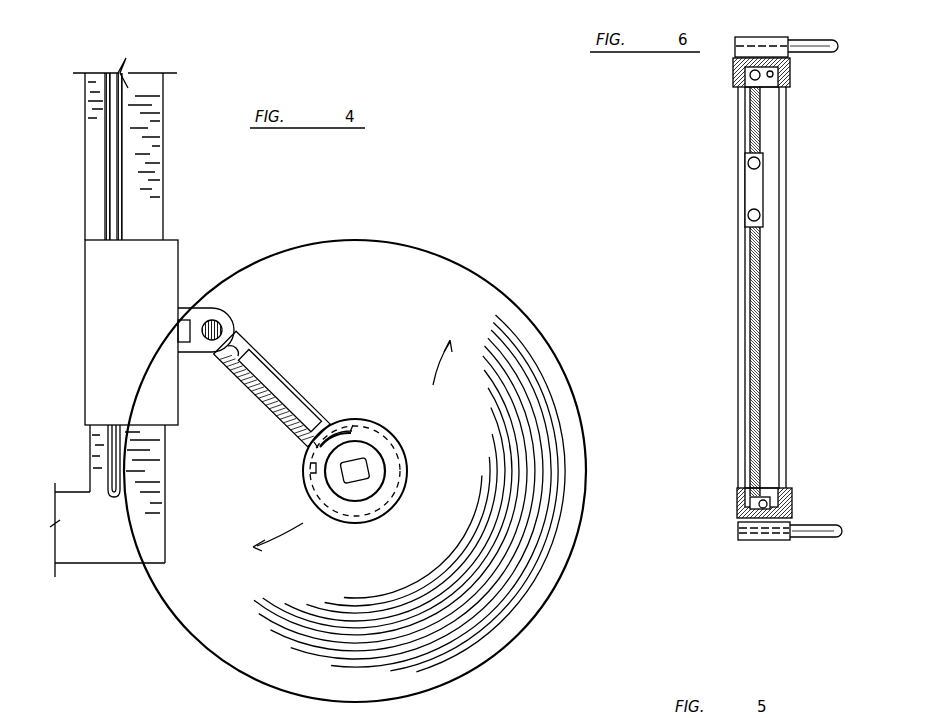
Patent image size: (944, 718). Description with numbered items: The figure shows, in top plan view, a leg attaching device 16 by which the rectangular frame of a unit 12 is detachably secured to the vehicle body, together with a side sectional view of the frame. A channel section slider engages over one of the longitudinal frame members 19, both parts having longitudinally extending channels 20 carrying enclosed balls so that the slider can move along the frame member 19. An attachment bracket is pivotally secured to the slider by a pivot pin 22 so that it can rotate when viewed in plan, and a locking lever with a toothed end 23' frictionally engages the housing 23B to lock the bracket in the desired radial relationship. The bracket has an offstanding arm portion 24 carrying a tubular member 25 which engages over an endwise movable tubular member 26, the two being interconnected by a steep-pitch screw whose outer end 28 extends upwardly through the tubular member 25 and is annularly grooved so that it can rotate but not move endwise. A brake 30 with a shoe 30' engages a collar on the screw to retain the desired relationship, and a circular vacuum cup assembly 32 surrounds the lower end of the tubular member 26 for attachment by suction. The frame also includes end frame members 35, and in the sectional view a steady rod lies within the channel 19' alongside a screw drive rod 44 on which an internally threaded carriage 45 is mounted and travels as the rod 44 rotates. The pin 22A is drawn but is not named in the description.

In FIG. 4, the unit 12 is at (108, 575).
In FIG. 4, the leg attaching devices 16 is at (316, 352).
In FIG. 4, the longitudinal frame member 19 is at (144, 149).
In FIG. 6, the longitudinal frame member 19 is at (785, 69).
In FIG. 6, the channel 19' is at (789, 504).
In FIG. 4, the longitudinally extending channels 20 is at (125, 496).
In FIG. 4, the pivot pin 22 is at (222, 332).
In FIG. 4, the pivot pin 22A is at (218, 322).
In FIG. 4, the housing 23B is at (242, 346).
In FIG. 4, the toothed end 23' is at (217, 389).
In FIG. 4, the offstanding arm portion 24 is at (334, 420).
In FIG. 4, the tubular member 25 is at (386, 435).
In FIG. 4, the endwise movable tubular member 26 is at (420, 454).
In FIG. 4, the outer end of the screw 28 is at (367, 478).
In FIG. 4, the brake 30 is at (285, 461).
In FIG. 4, the shoe 30' is at (361, 407).
In FIG. 4, the circular vacuum cup assembly 32 is at (361, 494).
In FIG. 6, the end frame member 35 is at (778, 396).
In FIG. 6, the screw drive rod 44 is at (758, 312).
In FIG. 6, the carriage 45 is at (764, 192).